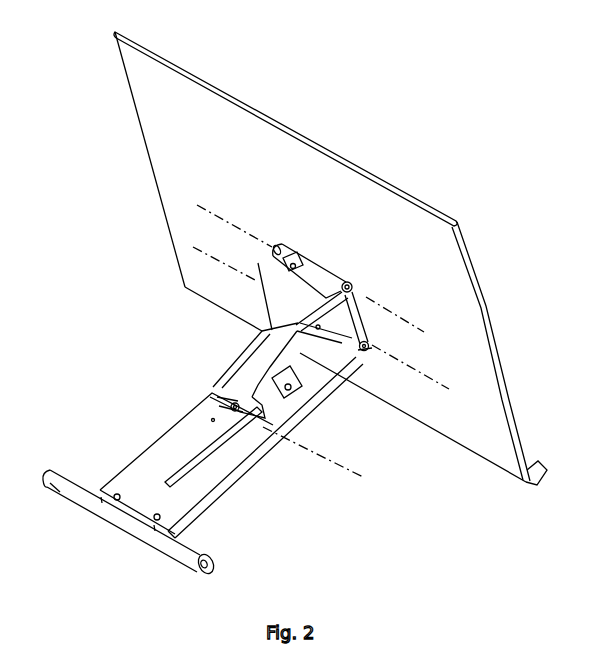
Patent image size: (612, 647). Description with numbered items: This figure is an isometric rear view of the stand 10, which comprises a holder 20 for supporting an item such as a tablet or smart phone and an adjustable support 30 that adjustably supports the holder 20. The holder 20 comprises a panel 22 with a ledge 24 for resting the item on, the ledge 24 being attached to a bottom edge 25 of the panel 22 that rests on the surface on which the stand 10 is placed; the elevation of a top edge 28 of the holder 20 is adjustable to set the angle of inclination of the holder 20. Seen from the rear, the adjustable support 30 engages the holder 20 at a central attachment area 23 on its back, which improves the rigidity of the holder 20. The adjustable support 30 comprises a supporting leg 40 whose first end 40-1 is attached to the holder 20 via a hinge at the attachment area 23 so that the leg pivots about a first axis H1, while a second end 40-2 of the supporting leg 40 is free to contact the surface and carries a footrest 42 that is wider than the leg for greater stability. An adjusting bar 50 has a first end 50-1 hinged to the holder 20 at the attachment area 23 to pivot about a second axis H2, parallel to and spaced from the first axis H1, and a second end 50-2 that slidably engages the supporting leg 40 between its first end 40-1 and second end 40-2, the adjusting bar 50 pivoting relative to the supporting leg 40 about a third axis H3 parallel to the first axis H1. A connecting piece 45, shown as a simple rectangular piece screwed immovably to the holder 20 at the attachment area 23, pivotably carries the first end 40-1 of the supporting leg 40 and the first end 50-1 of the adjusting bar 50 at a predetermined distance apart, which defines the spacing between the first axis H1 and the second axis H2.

The stand 10 is at (456, 146).
The holder 20 is at (177, 167).
The panel 22 is at (148, 97).
The attachment area 23 is at (319, 258).
The ledge 24 is at (536, 460).
The bottom edge 25 is at (483, 458).
The top edge 28 is at (237, 98).
The adjustable support 30 is at (249, 519).
The supporting leg 40 is at (153, 453).
The first end of the supporting leg 40-1 is at (367, 350).
The second end of the supporting leg 40-2 is at (140, 508).
The footrest 42 is at (80, 495).
The connecting piece 45 is at (343, 340).
The adjusting bar 50 is at (273, 332).
The first end of the adjusting bar 50-1 is at (275, 253).
The second end of the adjusting bar 50-2 is at (228, 402).
The first axis H1 is at (441, 383).
The second axis H2 is at (386, 307).
The third axis H3 is at (362, 478).